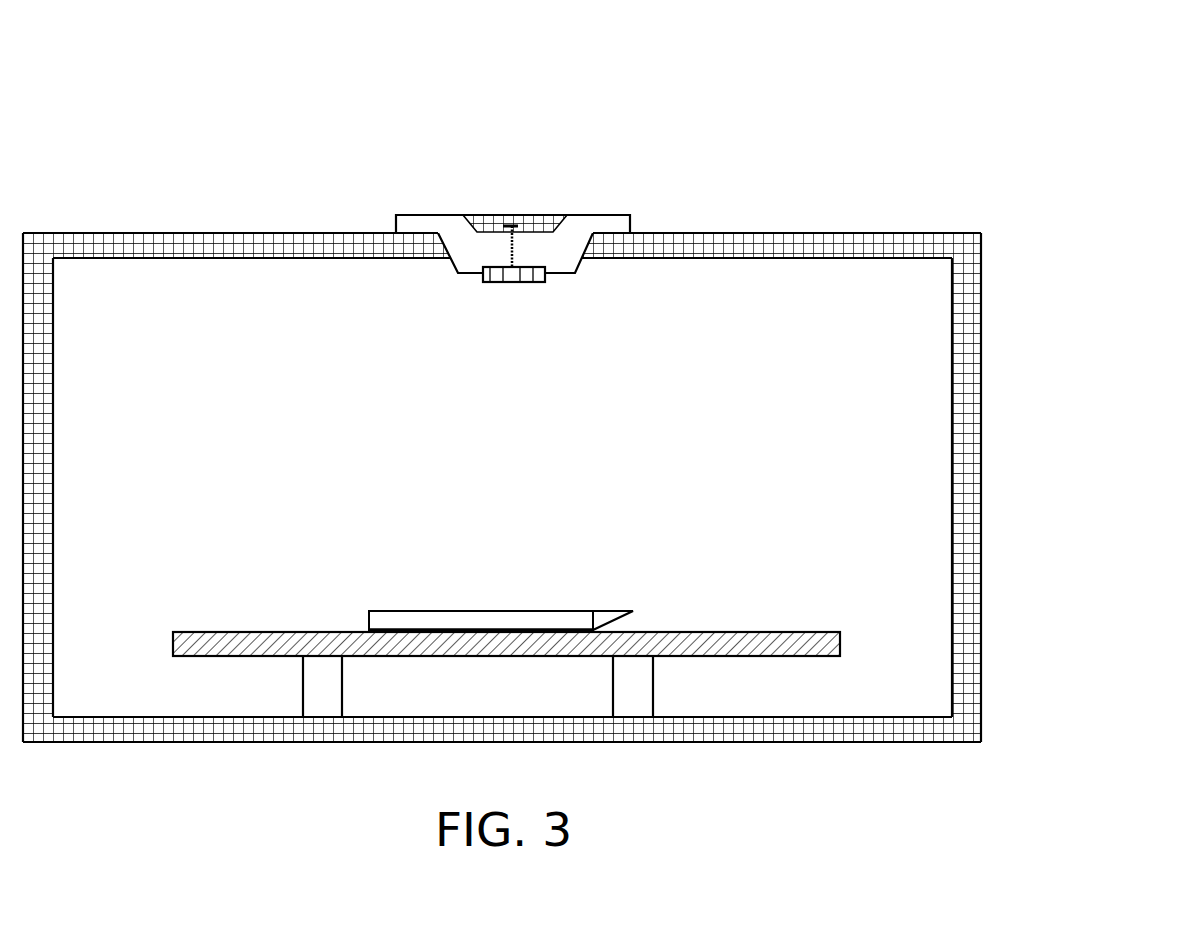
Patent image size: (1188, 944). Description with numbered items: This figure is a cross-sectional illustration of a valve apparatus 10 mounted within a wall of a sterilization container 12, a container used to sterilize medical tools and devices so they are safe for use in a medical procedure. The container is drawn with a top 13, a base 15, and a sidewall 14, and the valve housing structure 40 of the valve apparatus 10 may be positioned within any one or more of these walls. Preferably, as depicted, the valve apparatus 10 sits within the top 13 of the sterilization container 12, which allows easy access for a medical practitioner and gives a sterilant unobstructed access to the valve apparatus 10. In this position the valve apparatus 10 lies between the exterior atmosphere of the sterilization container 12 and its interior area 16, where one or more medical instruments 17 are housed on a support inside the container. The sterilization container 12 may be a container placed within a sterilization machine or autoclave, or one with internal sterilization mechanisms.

The valve apparatus 10 is at (648, 128).
The sterilization container 12 is at (1051, 223).
The top 13 is at (712, 231).
The sidewall 14 is at (982, 512).
The base 15 is at (602, 743).
The interior area 16 is at (225, 414).
The medical instruments 17 is at (548, 617).
The valve housing structure 40 is at (398, 215).